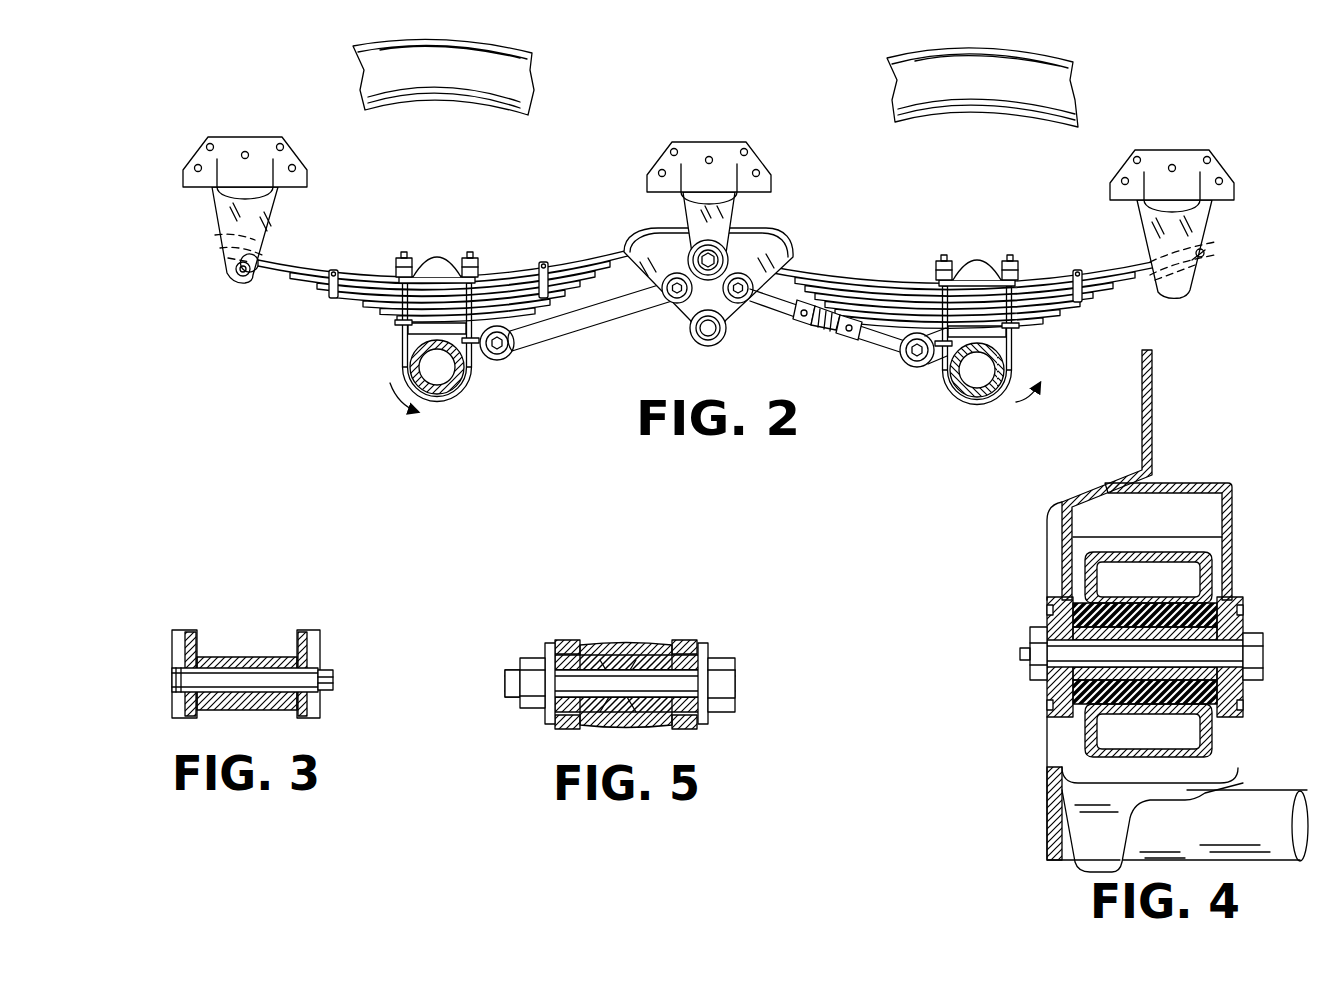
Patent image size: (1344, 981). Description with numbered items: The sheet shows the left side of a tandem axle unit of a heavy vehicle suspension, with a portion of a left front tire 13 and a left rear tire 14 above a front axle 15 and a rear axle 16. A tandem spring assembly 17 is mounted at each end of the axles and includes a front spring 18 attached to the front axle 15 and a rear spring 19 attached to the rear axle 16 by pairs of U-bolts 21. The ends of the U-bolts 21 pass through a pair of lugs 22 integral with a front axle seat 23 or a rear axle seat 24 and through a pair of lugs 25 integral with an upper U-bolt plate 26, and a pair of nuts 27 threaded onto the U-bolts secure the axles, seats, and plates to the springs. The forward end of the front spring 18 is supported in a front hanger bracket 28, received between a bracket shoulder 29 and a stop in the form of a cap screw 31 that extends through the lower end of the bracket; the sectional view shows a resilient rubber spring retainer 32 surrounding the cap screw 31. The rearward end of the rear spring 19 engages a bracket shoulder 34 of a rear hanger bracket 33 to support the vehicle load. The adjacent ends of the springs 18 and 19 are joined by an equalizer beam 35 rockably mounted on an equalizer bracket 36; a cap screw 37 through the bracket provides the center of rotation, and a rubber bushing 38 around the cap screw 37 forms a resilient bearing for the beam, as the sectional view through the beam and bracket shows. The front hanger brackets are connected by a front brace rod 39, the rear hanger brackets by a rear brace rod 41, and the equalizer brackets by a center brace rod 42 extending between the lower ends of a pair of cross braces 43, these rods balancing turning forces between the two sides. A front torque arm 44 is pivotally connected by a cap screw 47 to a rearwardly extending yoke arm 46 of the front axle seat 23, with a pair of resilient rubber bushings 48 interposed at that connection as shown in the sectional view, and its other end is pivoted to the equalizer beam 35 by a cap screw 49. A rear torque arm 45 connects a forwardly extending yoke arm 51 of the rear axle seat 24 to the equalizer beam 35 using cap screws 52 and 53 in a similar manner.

In FIG. 2, the left front tire 13 is at (425, 45).
In FIG. 2, the left rear tire 14 is at (935, 55).
In FIG. 2, the front axle 15 is at (455, 385).
In FIG. 2, the rear axle 16 is at (965, 396).
In FIG. 2, the tandem spring assembly 17 is at (248, 358).
In FIG. 2, the front spring 18 is at (362, 270).
In FIG. 2, the rear spring 19 is at (1062, 278).
In FIG. 2, the U-bolts 21 is at (706, 355).
In FIG. 2, the lugs 22 is at (701, 337).
In FIG. 2, the front axle seat 23 is at (421, 339).
In FIG. 2, the rear axle seat 24 is at (995, 343).
In FIG. 2, the lugs 25 is at (706, 337).
In FIG. 2, the upper U-bolt plate 26 is at (706, 337).
In FIG. 2, the nuts 27 is at (706, 337).
In FIG. 2, the front hanger bracket 28 is at (212, 222).
In FIG. 3, the front hanger bracket 28 is at (178, 647).
In FIG. 2, the bracket shoulder 29 is at (215, 236).
In FIG. 2, the cap screw 31 is at (235, 280).
In FIG. 3, the cap screw 31 is at (178, 680).
In FIG. 3, the resilient rubber spring retainer 32 is at (262, 657).
In FIG. 2, the rear hanger bracket 33 is at (1206, 210).
In FIG. 2, the bracket shoulder 34 is at (1208, 238).
In FIG. 2, the equalizer beam 35 is at (770, 245).
In FIG. 4, the equalizer beam 35 is at (1165, 552).
In FIG. 2, the equalizer bracket 36 is at (682, 222).
In FIG. 4, the equalizer bracket 36 is at (1088, 480).
In FIG. 2, the cap screw 37 is at (718, 250).
In FIG. 4, the cap screw 37 is at (1256, 640).
In FIG. 4, the rubber bushing 38 is at (1116, 691).
In FIG. 2, the front brace rod 39 is at (226, 270).
In FIG. 2, the rear brace rod 41 is at (1180, 290).
In FIG. 2, the center brace rod 42 is at (705, 348).
In FIG. 2, the cross braces 43 is at (700, 332).
In FIG. 2, the front torque arm 44 is at (590, 320).
In FIG. 5, the front torque arm 44 is at (627, 650).
In FIG. 2, the rear torque arm 45 is at (806, 327).
In FIG. 2, the yoke arm 46 is at (488, 352).
In FIG. 5, the yoke arm 46 is at (566, 640).
In FIG. 2, the cap screw 47 is at (522, 358).
In FIG. 5, the cap screw 47 is at (720, 658).
In FIG. 5, the resilient rubber bushings 48 is at (647, 727).
In FIG. 2, the cap screw 49 is at (676, 302).
In FIG. 2, the yoke arm 51 is at (904, 363).
In FIG. 2, the cap screw 52 is at (912, 357).
In FIG. 2, the cap screw 53 is at (740, 302).